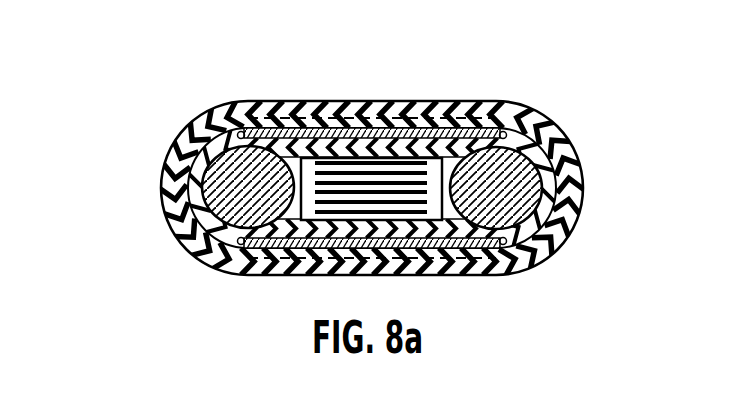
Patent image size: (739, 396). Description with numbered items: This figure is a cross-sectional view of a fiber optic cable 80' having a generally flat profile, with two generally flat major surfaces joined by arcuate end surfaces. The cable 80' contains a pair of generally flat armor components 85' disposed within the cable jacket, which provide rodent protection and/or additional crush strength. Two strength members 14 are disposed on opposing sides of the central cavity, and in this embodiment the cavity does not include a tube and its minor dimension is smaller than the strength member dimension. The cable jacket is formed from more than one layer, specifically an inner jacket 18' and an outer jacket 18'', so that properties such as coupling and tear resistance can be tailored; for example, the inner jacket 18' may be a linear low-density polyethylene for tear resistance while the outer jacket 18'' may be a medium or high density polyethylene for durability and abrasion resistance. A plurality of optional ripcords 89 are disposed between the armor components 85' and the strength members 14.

The cable 80' is at (343, 159).
The armor components 85' is at (387, 188).
The ripcords 89 is at (227, 112).
The inner jacket 18' is at (455, 187).
The outer jacket 18'' is at (426, 188).
The strength members 14 is at (541, 199).